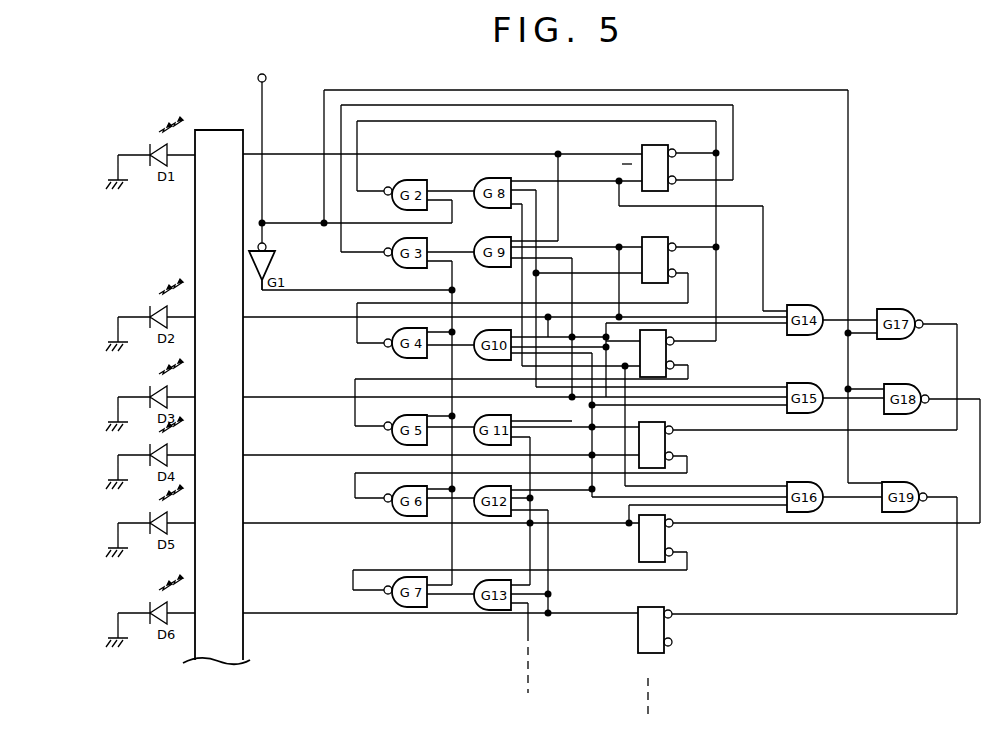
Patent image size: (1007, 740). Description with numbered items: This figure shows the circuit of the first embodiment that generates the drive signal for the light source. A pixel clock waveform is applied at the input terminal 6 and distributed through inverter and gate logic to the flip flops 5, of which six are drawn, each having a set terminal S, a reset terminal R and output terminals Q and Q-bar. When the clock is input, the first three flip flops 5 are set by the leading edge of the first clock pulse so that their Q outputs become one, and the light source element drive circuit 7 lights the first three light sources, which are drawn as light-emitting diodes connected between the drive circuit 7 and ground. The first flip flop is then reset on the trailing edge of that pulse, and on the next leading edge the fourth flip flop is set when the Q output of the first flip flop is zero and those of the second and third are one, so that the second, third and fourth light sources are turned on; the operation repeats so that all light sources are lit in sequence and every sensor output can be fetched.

The flip flops 5 is at (660, 145).
The input terminal 6 is at (258, 79).
The light source element drive circuit 7 is at (229, 661).